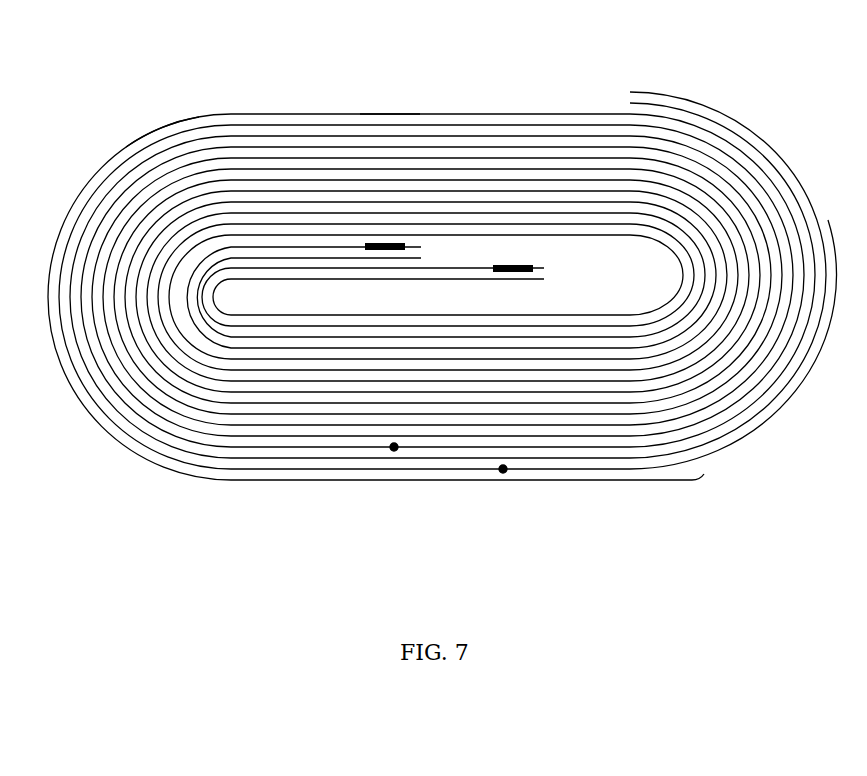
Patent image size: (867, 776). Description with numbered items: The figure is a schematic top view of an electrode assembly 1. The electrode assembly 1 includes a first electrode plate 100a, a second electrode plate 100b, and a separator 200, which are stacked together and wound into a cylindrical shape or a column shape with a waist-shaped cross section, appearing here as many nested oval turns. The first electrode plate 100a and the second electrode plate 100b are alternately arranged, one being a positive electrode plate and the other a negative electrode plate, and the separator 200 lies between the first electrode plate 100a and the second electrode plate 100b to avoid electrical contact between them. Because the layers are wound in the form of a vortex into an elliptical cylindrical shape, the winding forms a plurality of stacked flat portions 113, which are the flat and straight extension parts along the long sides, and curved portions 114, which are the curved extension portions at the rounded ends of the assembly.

The electrode assembly 1 is at (442, 295).
The first electrode plate 100a is at (715, 459).
The second electrode plate 100b is at (623, 457).
The flat portion 113 is at (388, 113).
The curved portion 114 is at (166, 122).
The separator 200 is at (394, 447).